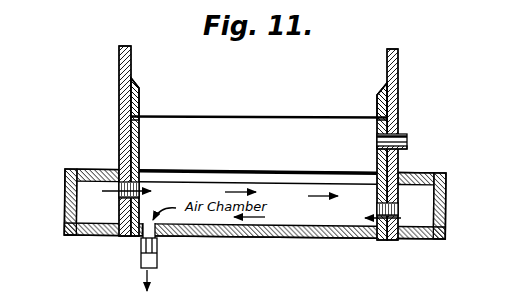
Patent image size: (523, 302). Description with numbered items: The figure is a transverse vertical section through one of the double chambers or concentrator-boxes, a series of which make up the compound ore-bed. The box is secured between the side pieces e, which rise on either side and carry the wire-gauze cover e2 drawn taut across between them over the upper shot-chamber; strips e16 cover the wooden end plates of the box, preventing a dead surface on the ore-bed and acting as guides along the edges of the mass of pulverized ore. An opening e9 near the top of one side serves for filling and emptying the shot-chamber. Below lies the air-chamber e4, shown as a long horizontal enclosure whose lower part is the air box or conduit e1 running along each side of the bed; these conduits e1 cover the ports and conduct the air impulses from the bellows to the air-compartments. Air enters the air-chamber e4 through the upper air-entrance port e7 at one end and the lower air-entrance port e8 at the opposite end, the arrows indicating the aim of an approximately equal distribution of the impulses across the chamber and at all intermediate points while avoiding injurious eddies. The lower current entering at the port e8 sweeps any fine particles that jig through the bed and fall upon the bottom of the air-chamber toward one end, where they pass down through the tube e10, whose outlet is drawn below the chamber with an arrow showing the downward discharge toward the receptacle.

The side pieces e is at (410, 57).
The air boxes or conduits e1 is at (457, 207).
The wire-gauze cover e2 is at (259, 106).
The air-chamber e4 is at (325, 207).
The upper air-entrance port e7 is at (394, 207).
The lower air-entrance port e8 is at (119, 200).
The opening e9 is at (399, 134).
The tubes e10 is at (142, 262).
The strips e16 is at (138, 86).